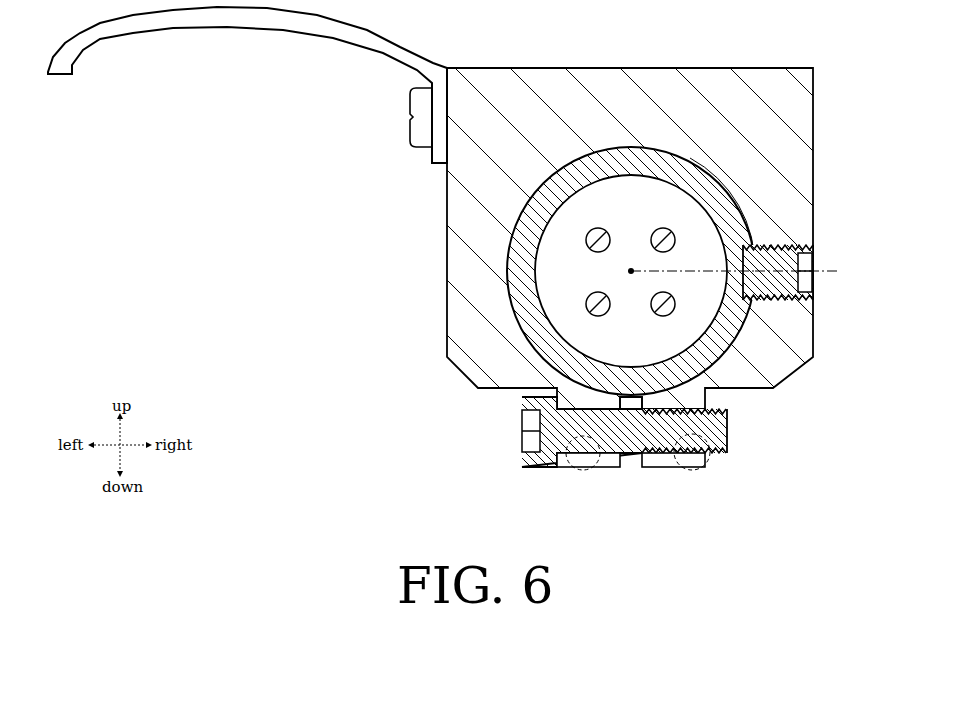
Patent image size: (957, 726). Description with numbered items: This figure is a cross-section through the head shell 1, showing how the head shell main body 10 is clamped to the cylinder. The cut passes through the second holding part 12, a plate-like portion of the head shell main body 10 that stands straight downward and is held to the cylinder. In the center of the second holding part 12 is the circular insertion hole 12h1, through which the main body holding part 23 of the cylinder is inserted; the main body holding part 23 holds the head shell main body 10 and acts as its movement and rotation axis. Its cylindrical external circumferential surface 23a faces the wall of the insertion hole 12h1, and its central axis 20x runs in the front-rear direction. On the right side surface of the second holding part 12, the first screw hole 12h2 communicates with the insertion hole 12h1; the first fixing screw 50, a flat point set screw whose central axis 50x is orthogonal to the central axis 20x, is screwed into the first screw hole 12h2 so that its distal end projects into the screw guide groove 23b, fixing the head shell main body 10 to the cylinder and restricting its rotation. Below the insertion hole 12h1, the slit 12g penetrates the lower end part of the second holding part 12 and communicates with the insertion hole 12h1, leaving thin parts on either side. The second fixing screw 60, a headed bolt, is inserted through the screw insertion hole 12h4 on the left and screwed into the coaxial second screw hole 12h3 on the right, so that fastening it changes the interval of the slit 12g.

The head shell 1 is at (170, 333).
The head shell main body 10 is at (247, 85).
The second holding part 12 is at (447, 183).
The insertion hole 12h1 is at (630, 168).
The first screw hole 12h2 is at (813, 247).
The second screw hole 12h3 is at (713, 460).
The screw insertion hole 12h4 is at (568, 456).
The slit 12g is at (630, 467).
The central axis 20x is at (631, 271).
The main body holding part 23 is at (532, 328).
The external circumferential surface 23a is at (690, 158).
The screw guide groove 23b is at (755, 290).
The first fixing screw 50 is at (813, 284).
The central axis 50x is at (815, 270).
The second fixing screw 60 is at (520, 442).